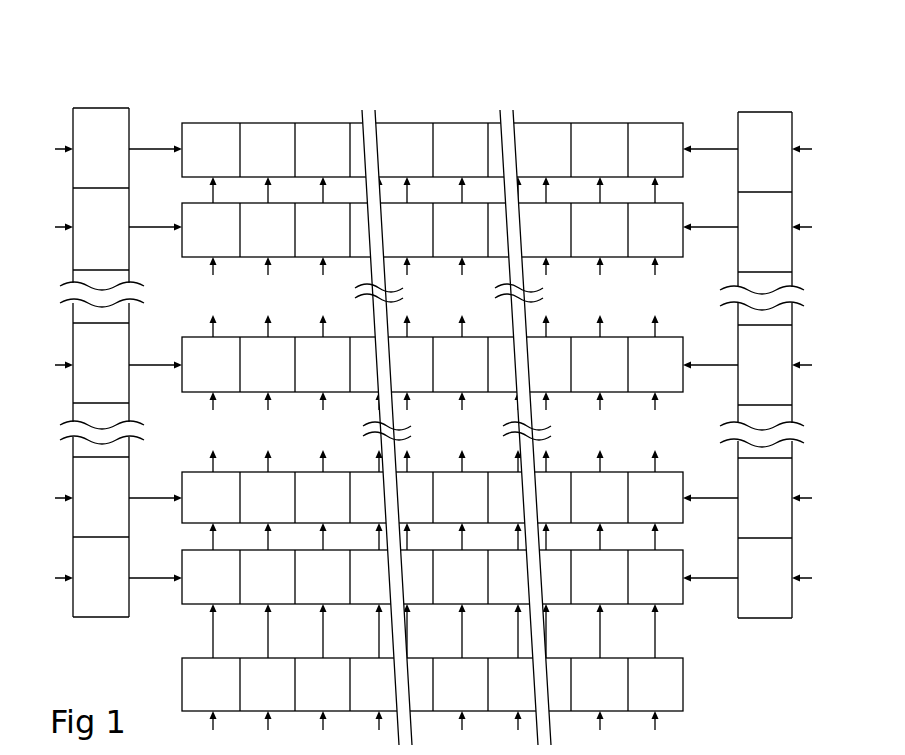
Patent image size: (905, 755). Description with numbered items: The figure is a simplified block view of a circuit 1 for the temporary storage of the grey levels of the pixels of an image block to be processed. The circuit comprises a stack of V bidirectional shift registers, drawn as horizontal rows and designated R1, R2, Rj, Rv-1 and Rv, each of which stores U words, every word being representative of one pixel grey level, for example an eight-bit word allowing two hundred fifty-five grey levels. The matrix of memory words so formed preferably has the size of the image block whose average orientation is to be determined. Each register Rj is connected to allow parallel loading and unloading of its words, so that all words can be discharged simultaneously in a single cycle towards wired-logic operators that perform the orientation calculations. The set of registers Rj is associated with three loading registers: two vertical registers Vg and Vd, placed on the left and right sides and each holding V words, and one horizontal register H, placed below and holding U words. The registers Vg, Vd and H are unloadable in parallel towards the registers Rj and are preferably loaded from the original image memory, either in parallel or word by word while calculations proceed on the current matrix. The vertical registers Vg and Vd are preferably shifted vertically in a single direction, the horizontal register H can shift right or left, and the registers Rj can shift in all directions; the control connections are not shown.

The circuit 1 is at (692, 105).
The number of words per register U is at (676, 91).
The number of shift registers V is at (33, 132).
The vertical loading register Vg is at (103, 108).
The vertical loading register Vd is at (770, 112).
The bidirectional shift register R1 is at (205, 124).
The bidirectional shift register R2 is at (190, 258).
The bidirectional shift register Rj is at (225, 337).
The bidirectional shift register Rv-1 is at (185, 472).
The bidirectional shift register Rv is at (183, 562).
The horizontal loading register H is at (670, 712).